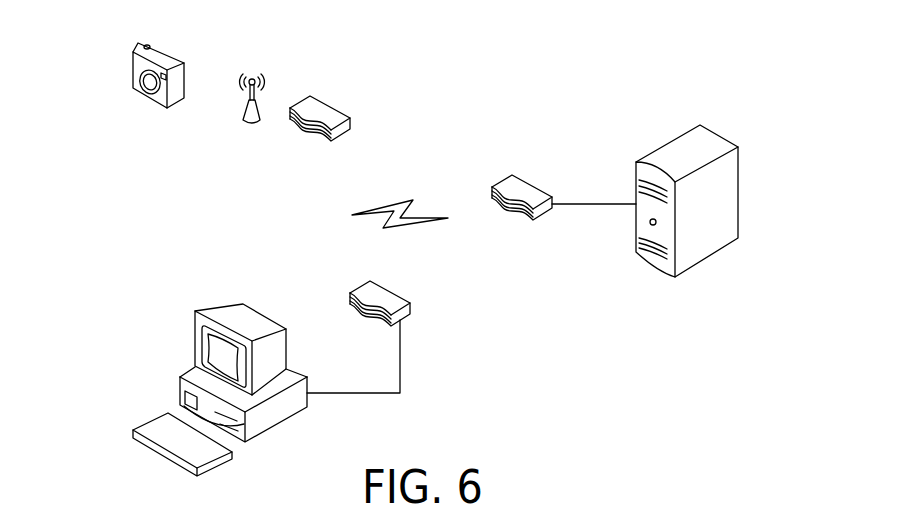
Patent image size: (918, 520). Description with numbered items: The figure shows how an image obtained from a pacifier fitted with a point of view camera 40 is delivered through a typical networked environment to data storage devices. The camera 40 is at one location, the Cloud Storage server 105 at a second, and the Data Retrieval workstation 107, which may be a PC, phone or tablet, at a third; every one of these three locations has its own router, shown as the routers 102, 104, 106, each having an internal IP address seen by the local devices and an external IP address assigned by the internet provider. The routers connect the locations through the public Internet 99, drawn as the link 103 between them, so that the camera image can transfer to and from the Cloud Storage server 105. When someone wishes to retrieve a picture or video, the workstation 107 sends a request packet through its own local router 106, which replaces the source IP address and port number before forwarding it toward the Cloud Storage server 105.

The camera 40 is at (130, 71).
The public Internet 99 is at (252, 75).
The router 102 is at (330, 100).
The network link 103 is at (396, 198).
The router 104 is at (530, 182).
The Cloud Storage server 105 is at (742, 193).
The router 106 is at (412, 307).
The workstation 107 is at (180, 393).